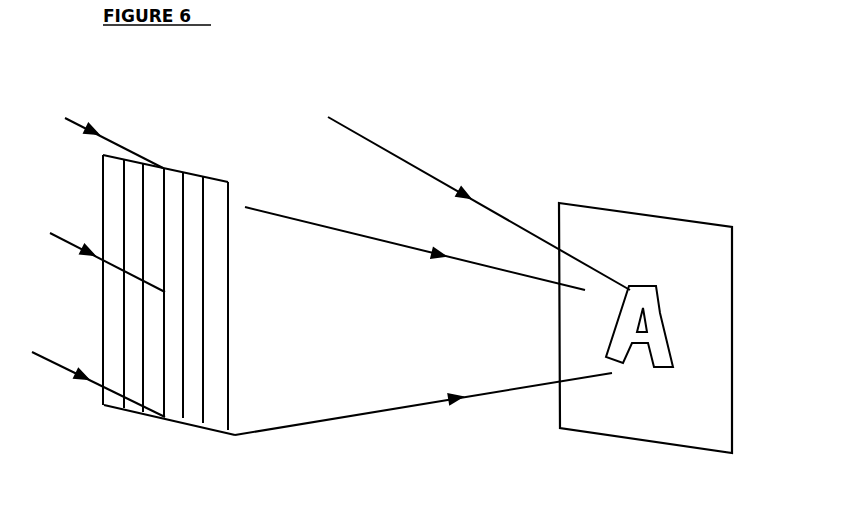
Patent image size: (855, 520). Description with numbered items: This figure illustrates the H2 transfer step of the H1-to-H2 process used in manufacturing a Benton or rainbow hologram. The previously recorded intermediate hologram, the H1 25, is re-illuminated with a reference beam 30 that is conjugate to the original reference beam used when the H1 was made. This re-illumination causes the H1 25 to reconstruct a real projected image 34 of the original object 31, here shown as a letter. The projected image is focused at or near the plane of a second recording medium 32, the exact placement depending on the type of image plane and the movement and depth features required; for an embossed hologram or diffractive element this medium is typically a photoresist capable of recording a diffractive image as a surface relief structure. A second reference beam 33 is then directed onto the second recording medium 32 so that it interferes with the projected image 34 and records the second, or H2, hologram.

The H1 hologram 25 is at (180, 295).
The reference beam 30 is at (96, 266).
The original object 31 is at (644, 342).
The second recording medium 32 is at (666, 328).
The second reference beam 33 is at (479, 203).
The real projected image 34 is at (423, 323).